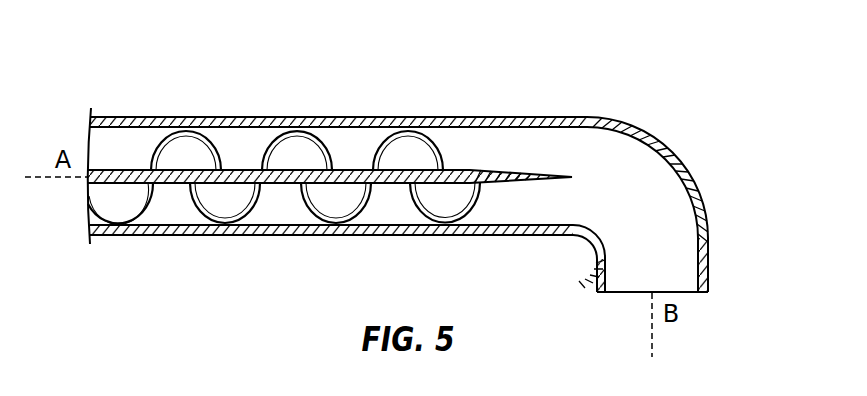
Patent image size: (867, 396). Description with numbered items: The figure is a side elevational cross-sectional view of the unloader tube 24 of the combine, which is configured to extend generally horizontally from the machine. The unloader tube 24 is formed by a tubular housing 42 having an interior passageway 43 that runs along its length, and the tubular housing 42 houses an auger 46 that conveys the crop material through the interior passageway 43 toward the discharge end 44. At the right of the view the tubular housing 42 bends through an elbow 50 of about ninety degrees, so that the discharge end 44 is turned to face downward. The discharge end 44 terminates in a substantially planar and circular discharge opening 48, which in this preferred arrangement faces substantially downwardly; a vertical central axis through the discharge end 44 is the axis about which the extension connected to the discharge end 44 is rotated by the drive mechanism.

The unloader tube 24 is at (604, 34).
The tubular housing 42 is at (448, 116).
The interior passageway 43 is at (124, 142).
The auger 46 is at (217, 146).
The elbow 50 is at (625, 112).
The discharge end 44 is at (727, 256).
The discharge opening 48 is at (622, 294).